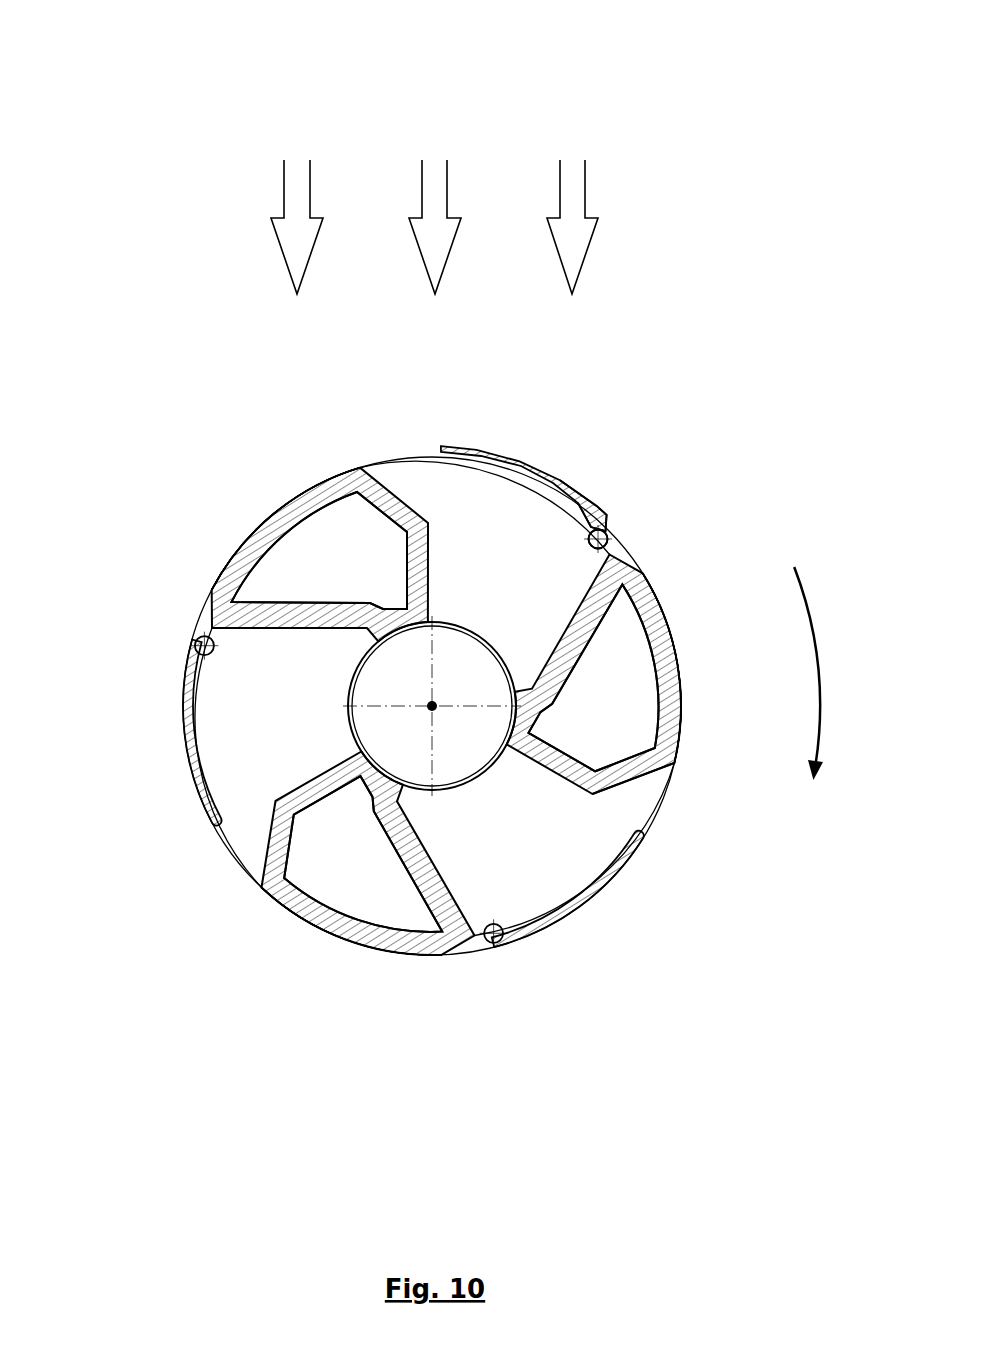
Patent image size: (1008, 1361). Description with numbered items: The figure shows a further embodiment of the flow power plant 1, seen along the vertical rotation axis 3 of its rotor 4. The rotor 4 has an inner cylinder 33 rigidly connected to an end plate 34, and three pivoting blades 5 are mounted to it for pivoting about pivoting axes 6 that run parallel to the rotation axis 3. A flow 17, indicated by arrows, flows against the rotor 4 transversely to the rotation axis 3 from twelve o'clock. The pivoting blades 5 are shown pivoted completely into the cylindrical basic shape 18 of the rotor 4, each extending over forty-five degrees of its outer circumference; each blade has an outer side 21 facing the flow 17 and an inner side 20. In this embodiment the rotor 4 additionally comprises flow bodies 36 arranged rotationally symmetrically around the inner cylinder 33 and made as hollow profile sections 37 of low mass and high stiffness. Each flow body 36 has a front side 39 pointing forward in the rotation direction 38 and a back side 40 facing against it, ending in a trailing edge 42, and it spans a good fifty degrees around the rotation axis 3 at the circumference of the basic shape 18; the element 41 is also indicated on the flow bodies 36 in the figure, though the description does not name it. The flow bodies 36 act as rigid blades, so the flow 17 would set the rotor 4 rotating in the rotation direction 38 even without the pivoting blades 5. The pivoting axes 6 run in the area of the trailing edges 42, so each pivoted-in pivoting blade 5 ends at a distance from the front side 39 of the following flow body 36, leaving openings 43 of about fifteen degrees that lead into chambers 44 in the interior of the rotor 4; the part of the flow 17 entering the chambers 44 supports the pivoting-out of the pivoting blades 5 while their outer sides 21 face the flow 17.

The flow power plant 1 is at (105, 165).
The rotation axis 3 is at (432, 707).
The rotor 4 is at (283, 495).
The pivoting blade 5 is at (599, 513).
The pivoting axis 6 is at (608, 537).
The flow 17 is at (605, 222).
The cylindrical basic shape 18 is at (250, 878).
The inner side 20 is at (630, 457).
The outer side 21 is at (518, 458).
The inner cylinder 33 is at (506, 655).
The end plate 34 is at (640, 808).
The flow body 36 is at (250, 535).
The hollow profile section 37 is at (400, 953).
The rotation direction 38 is at (822, 640).
The front side 39 is at (398, 497).
The back side 40 is at (575, 612).
The rim segment 41 is at (272, 507).
The trailing edge 42 is at (212, 627).
The opening 43 is at (382, 462).
The chamber 44 is at (515, 515).